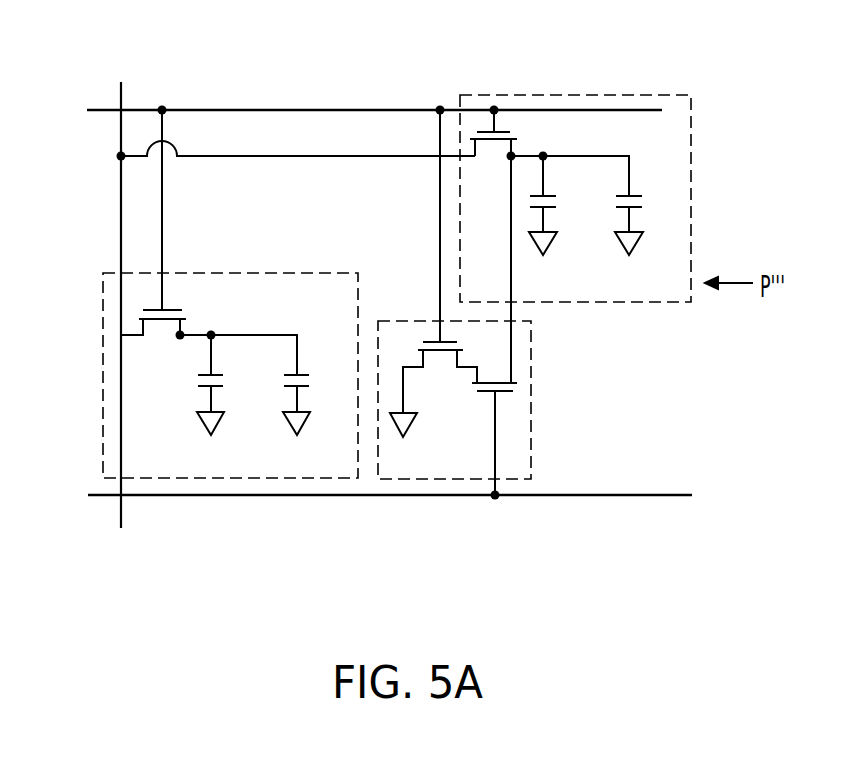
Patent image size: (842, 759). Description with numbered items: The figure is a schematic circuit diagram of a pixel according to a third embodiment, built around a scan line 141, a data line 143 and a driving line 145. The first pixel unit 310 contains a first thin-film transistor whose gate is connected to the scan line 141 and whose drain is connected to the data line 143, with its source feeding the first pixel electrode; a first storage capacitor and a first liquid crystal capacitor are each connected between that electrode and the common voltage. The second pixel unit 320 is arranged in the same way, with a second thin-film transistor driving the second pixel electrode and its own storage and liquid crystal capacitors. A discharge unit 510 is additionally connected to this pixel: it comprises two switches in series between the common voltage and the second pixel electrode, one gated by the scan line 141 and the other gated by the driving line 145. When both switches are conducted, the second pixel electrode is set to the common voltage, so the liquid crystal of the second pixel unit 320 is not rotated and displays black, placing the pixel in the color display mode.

The scan line 141 is at (105, 113).
The data line 143 is at (123, 92).
The driving line 145 is at (103, 497).
The first pixel unit 310 is at (285, 263).
The second pixel unit 320 is at (691, 178).
The discharge unit 510 is at (531, 417).